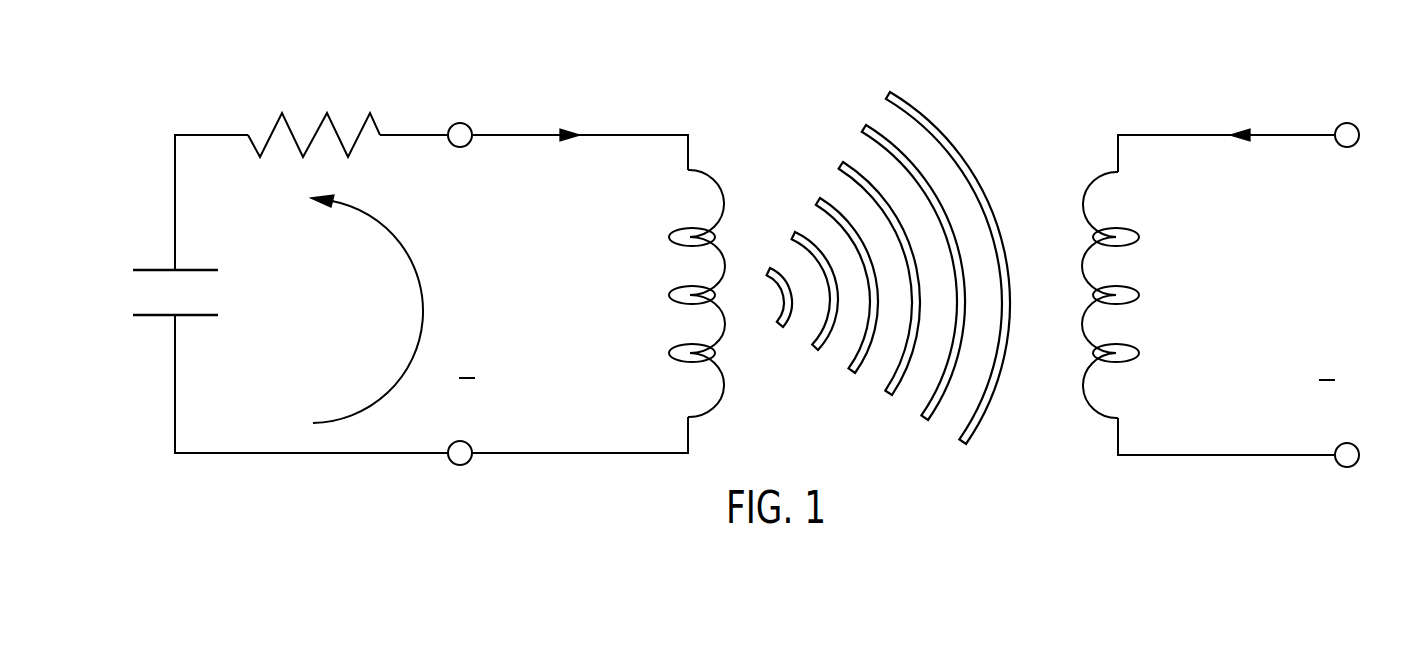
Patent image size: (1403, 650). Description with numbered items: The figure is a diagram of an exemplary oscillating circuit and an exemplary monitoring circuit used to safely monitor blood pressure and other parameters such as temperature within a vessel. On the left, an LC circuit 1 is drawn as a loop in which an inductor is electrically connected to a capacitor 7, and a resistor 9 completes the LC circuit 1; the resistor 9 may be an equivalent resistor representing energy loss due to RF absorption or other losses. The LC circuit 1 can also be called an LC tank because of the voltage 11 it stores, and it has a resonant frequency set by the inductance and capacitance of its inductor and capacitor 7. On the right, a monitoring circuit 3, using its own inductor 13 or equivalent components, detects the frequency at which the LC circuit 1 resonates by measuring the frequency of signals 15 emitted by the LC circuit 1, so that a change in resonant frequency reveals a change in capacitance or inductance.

The LC circuit 1 is at (535, 130).
The monitoring circuit 3 is at (1165, 130).
The capacitor 7 is at (153, 268).
The resistor 9 is at (275, 125).
The voltage 11 is at (462, 282).
The inductor 13 is at (1097, 178).
The signals 15 is at (893, 90).